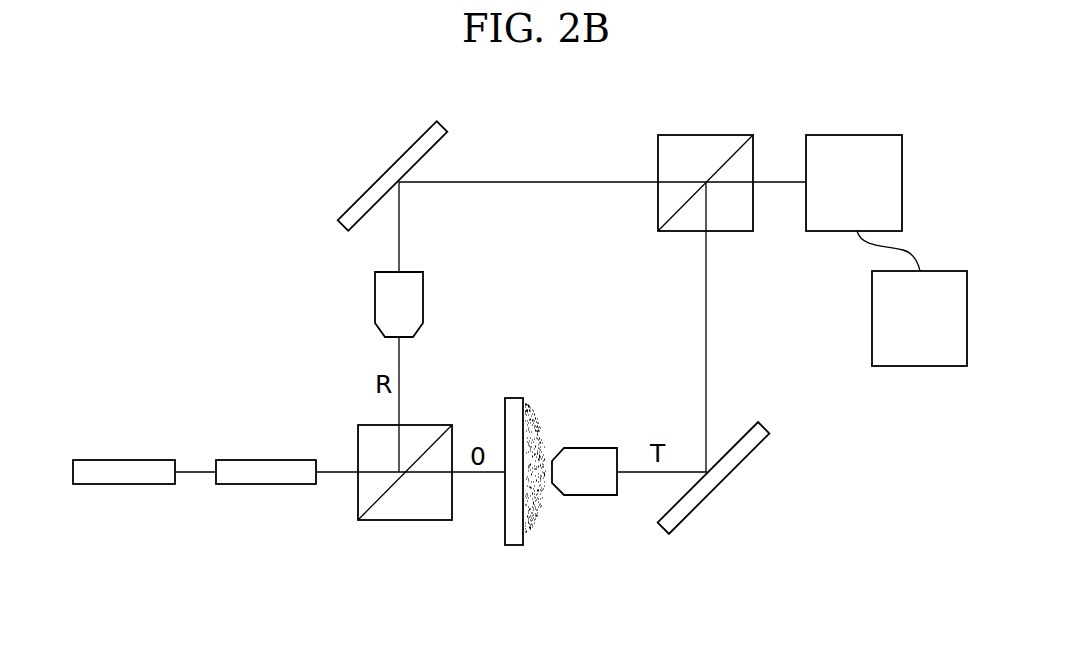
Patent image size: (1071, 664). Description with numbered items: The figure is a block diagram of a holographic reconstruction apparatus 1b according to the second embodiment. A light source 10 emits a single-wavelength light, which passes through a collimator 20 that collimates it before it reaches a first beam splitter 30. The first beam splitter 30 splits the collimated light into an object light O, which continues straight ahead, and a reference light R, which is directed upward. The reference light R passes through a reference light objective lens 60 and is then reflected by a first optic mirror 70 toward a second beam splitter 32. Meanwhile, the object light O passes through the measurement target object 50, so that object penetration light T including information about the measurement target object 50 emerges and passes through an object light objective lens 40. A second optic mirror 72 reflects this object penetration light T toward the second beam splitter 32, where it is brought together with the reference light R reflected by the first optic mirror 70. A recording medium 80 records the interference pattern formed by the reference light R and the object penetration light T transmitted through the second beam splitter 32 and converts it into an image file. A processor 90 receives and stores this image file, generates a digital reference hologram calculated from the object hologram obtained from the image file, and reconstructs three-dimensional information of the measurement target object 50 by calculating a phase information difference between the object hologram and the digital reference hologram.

The holographic reconstruction apparatus 1b is at (216, 198).
The light source 10 is at (130, 460).
The collimator 20 is at (258, 460).
The first beam splitter 30 is at (417, 425).
The second beam splitter 32 is at (721, 135).
The object light objective lens 40 is at (588, 448).
The measurement target object 50 is at (563, 397).
The reference light objective lens 60 is at (425, 297).
The first optic mirror 70 is at (398, 155).
The second optic mirror 72 is at (763, 425).
The recording medium 80 is at (862, 135).
The processor 90 is at (943, 271).